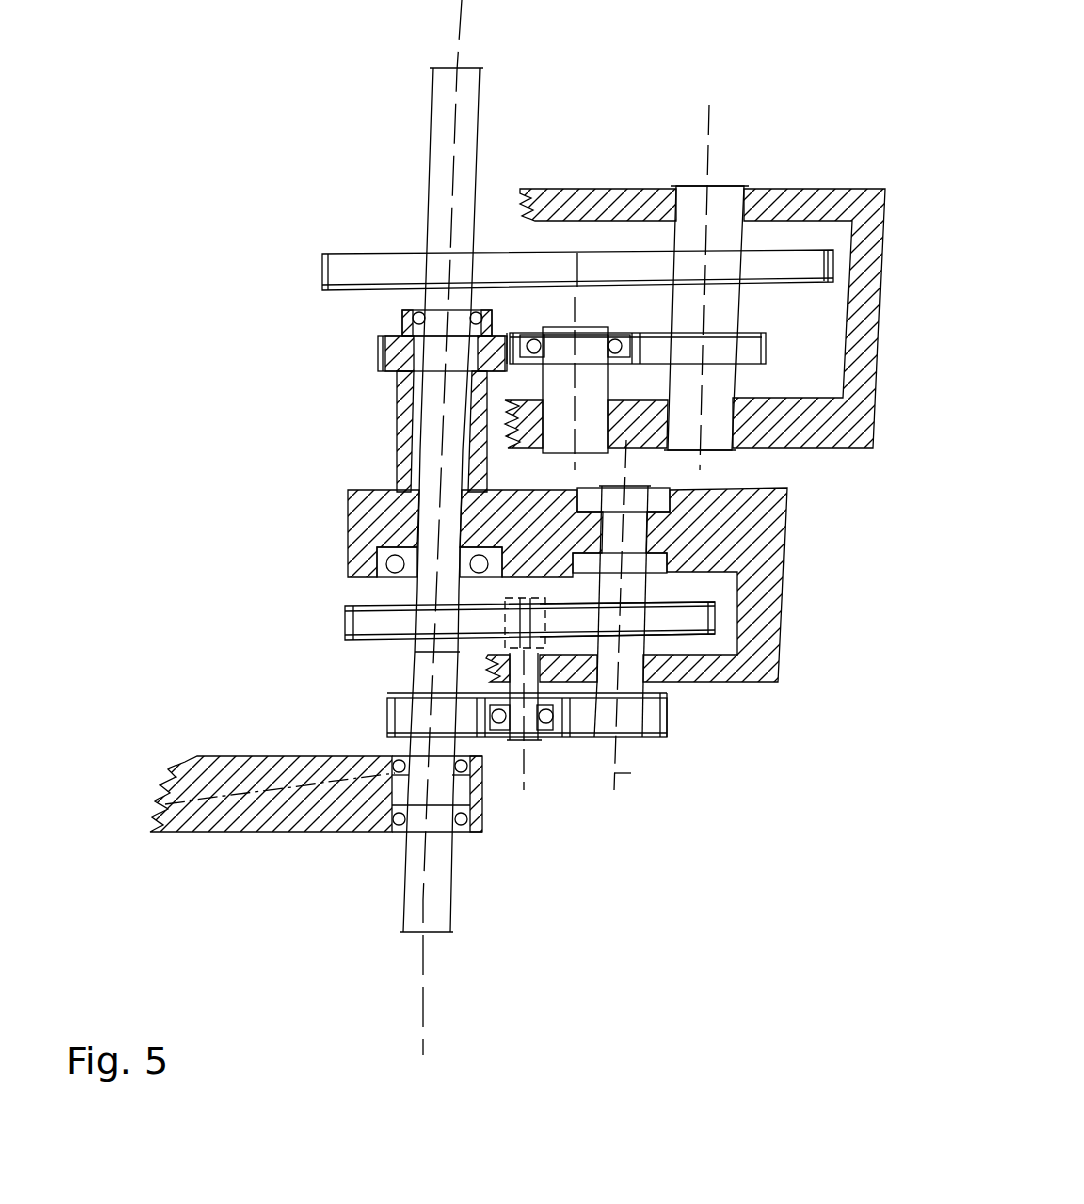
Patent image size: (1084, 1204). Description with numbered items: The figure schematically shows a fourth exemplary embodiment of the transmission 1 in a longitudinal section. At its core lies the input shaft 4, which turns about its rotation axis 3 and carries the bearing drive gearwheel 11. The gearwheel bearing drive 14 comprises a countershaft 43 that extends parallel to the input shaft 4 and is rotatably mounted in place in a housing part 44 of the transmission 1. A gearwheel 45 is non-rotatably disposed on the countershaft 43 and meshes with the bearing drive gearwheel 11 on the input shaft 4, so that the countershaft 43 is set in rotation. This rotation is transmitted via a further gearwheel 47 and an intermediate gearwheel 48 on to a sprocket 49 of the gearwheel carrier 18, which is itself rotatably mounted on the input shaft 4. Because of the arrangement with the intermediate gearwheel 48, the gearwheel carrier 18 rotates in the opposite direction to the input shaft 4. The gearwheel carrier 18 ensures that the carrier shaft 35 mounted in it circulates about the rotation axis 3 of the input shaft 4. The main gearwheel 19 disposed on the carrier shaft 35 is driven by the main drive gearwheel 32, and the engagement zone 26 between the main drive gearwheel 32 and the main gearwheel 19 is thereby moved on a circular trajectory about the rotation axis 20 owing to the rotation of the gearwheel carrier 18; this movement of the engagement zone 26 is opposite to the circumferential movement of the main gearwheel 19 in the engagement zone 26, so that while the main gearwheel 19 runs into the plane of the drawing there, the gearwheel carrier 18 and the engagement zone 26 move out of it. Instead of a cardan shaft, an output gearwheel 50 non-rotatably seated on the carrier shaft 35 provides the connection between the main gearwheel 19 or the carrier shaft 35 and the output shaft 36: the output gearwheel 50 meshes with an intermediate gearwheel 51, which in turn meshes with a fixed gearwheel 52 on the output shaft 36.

The transmission 1 is at (667, 86).
The rotation axis 3 is at (460, 42).
The input shaft 4 is at (478, 122).
The bearing drive gearwheel 11 is at (337, 252).
The gearwheel bearing drive 14 is at (785, 527).
The gearwheel carrier 18 is at (397, 455).
The main gearwheel 19 is at (717, 613).
The rotation axis 20 is at (636, 615).
The engagement zone 26 is at (492, 647).
The main drive gearwheel 32 is at (345, 638).
The carrier shaft 35 is at (638, 646).
The output shaft 36 is at (452, 900).
The countershaft 43 is at (745, 232).
The housing part 44 is at (882, 256).
The gearwheel 45 is at (813, 250).
The further gearwheel 47 is at (770, 345).
The intermediate gearwheel 48 is at (624, 322).
The sprocket 49 is at (378, 358).
The output gearwheel 50 is at (668, 723).
The intermediate gearwheel 51 is at (546, 740).
The fixed gearwheel 52 is at (385, 719).